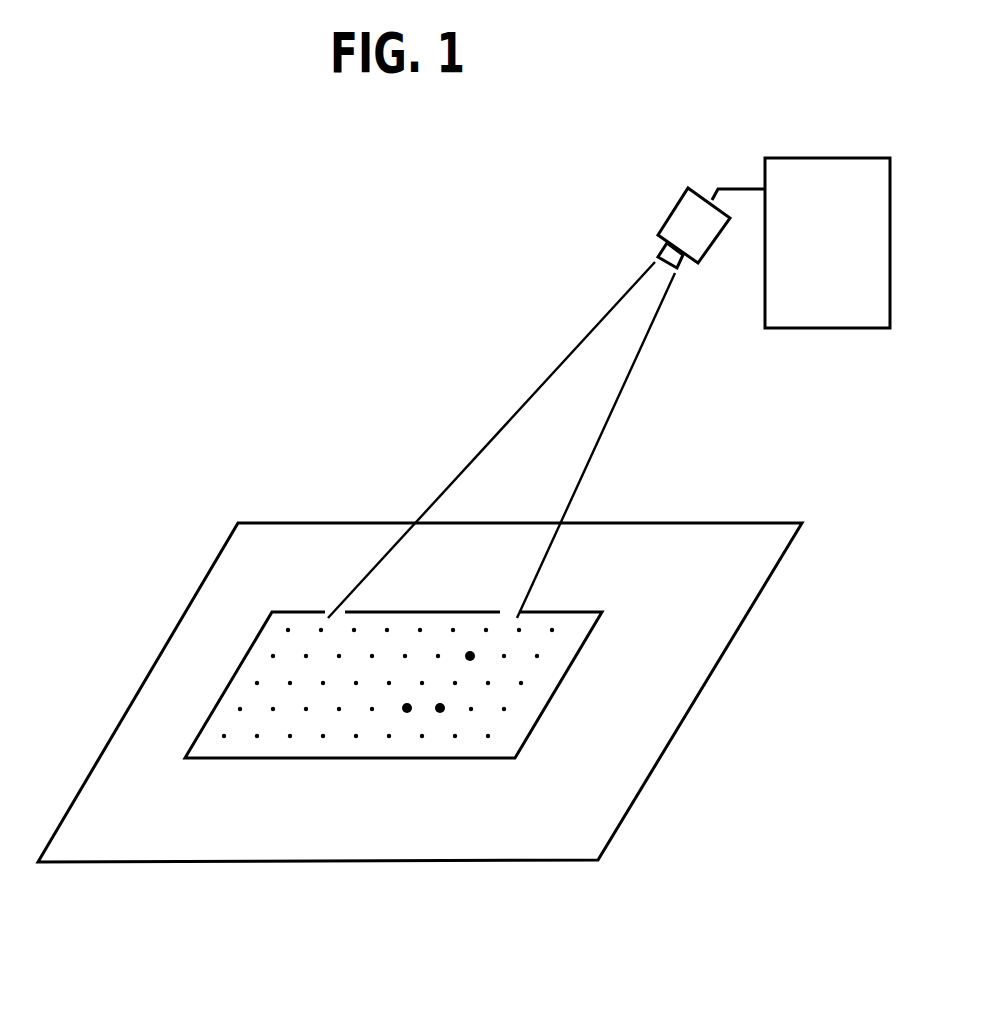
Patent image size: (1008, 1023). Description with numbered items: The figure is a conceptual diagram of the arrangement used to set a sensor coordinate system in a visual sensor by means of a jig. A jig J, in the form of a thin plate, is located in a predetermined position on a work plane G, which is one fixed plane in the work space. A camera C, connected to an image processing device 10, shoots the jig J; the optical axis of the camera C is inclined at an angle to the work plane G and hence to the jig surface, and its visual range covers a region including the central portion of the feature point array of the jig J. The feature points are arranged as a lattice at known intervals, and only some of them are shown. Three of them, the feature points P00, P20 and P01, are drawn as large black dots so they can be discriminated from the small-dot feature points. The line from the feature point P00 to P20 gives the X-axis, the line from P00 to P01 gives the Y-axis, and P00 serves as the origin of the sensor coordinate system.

The image processing device 10 is at (810, 157).
The camera C is at (670, 208).
The work plane G is at (632, 805).
The jig J is at (538, 722).
The feature point P20 is at (474, 654).
The feature point P01 is at (405, 710).
The feature point P00 is at (437, 710).